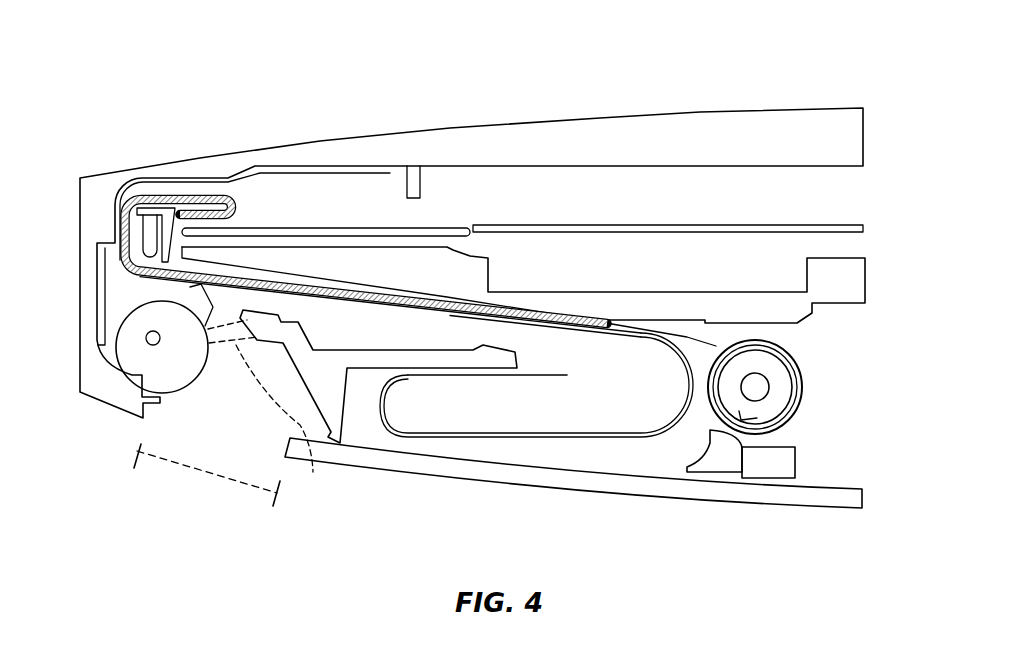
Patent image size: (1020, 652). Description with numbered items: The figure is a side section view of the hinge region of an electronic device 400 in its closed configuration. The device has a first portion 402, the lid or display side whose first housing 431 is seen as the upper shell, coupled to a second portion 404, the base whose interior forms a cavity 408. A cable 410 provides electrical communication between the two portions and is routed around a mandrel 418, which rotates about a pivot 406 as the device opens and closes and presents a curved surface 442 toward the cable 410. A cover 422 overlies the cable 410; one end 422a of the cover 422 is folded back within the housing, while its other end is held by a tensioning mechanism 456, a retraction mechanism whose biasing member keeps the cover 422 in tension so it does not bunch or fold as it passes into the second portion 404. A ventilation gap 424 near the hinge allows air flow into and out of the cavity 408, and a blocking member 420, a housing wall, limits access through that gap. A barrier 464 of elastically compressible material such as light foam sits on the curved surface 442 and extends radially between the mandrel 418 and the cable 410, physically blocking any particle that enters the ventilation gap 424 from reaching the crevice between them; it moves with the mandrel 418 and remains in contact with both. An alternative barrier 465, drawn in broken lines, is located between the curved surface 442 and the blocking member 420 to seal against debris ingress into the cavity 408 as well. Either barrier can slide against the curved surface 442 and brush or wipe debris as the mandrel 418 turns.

The electronic device 400 is at (462, 297).
The first portion 402 is at (472, 228).
The second portion 404 is at (756, 514).
The pivot axis 406 is at (148, 343).
The cavity 408 is at (536, 385).
The cable 410 is at (686, 364).
The mandrel 418 is at (129, 355).
The blocking member 420 is at (344, 377).
The cover 422 is at (383, 214).
The end of cover 422a is at (234, 205).
The ventilation gap 424 is at (207, 474).
The first housing 431 is at (735, 148).
The curved surface 442 is at (205, 349).
The tensioning mechanism 456 is at (812, 378).
The barrier 464 is at (197, 294).
The barrier 465 is at (289, 423).